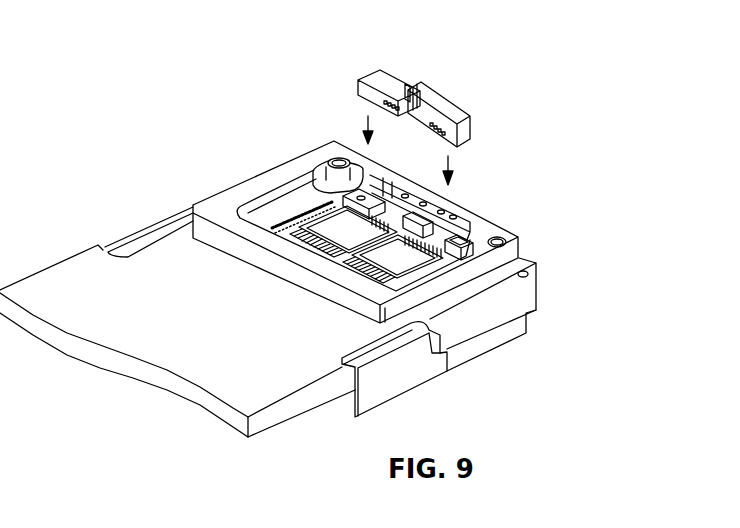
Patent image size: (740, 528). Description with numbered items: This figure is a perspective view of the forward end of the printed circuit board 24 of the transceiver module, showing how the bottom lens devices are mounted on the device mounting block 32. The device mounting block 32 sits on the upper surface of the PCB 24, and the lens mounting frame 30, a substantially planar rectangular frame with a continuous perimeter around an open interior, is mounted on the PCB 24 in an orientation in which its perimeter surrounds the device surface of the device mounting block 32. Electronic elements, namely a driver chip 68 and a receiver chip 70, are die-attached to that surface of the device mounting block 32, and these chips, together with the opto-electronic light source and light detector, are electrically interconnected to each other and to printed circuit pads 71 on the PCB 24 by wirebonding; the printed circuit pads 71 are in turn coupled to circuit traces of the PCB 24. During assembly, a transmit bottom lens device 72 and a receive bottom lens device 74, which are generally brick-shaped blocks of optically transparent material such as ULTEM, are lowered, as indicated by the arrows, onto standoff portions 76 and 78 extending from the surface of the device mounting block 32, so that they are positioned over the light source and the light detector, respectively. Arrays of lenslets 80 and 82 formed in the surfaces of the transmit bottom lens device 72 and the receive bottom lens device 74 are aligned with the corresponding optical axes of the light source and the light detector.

The printed circuit board 24 is at (80, 252).
The lens mounting frame 30 is at (385, 218).
The device mounting block 32 is at (528, 336).
The driver chip 68 is at (372, 260).
The receiver chip 70 is at (323, 222).
The printed circuit pads 71 is at (290, 223).
The transmit bottom lens device 72 is at (468, 127).
The receive bottom lens device 74 is at (376, 92).
The standoff portion 76 is at (460, 235).
The standoff portion 78 is at (340, 157).
The array of lenslets 80 is at (432, 128).
The array of lenslets 82 is at (386, 108).